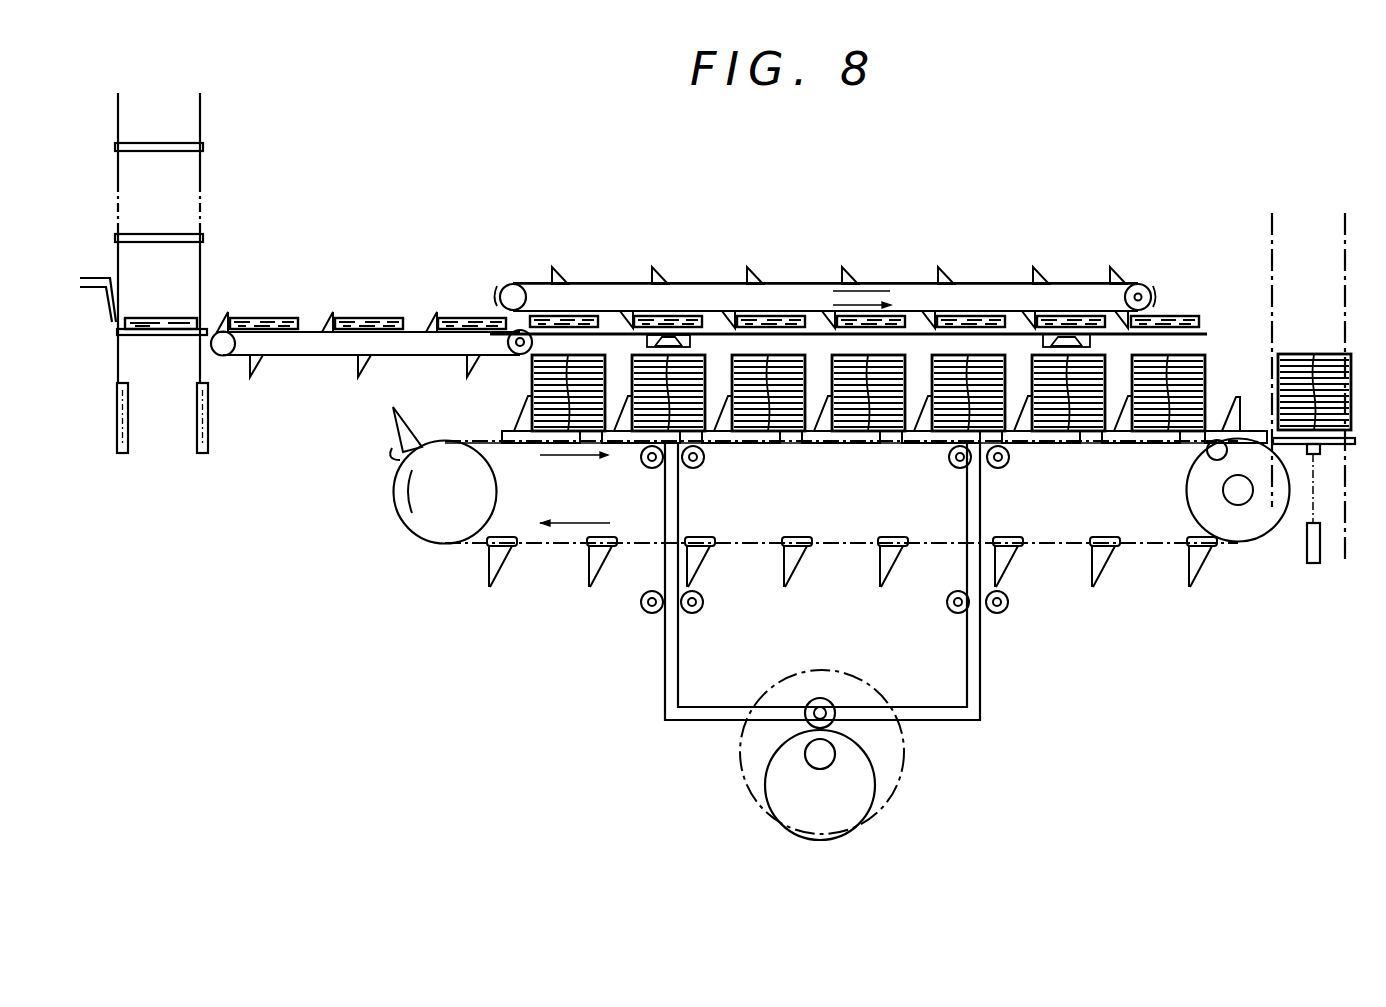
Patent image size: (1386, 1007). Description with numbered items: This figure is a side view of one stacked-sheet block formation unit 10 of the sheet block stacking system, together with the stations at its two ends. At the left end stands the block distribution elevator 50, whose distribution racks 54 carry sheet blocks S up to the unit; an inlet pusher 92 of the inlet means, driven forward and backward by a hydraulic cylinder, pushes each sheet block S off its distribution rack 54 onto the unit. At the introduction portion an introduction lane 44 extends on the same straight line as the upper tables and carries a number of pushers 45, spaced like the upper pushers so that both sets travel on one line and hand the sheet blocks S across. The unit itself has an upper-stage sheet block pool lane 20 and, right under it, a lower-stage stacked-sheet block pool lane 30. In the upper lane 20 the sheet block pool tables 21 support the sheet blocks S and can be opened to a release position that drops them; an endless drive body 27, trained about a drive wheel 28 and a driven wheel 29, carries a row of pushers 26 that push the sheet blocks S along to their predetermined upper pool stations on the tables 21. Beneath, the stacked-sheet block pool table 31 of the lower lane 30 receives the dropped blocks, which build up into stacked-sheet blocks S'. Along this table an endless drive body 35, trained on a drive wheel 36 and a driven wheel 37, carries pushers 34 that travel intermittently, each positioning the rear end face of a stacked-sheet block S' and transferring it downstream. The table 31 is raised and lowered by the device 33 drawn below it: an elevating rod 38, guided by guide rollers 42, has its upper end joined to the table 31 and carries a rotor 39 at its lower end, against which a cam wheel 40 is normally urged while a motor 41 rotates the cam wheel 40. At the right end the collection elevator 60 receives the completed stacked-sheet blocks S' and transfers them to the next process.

The block formation unit 10 is at (1107, 257).
The upper-stage sheet block pool lane 20 is at (807, 303).
The sheet block pool table 21 is at (1008, 317).
The pusher 26 is at (553, 281).
The endless drive body 27 is at (905, 285).
The drive wheel 28 is at (1140, 284).
The driven wheel 29 is at (513, 292).
The lower-stage stacked-sheet block pool lane 30 is at (803, 448).
The stacked-sheet block pool table 31 is at (868, 444).
The device for moving the table upward and downward 33 is at (951, 694).
The pusher 34 is at (525, 418).
The endless drive body 35 is at (1140, 544).
The drive wheel 36 is at (1196, 502).
The driven wheel 37 is at (408, 518).
The elevating rod 38 is at (693, 721).
The rotor 39 is at (820, 698).
The cam wheel 40 is at (860, 802).
The motor 41 is at (907, 763).
The guide roller 42 is at (962, 468).
The introduction lane 44 is at (308, 333).
The pusher 45 is at (250, 363).
The block distribution elevator 50 is at (178, 85).
The distribution rack 54 is at (162, 338).
The collection elevator 60 is at (1330, 196).
The inlet pusher 92 is at (106, 302).
The sheet block S is at (755, 323).
The stacked-sheet block S' is at (890, 359).